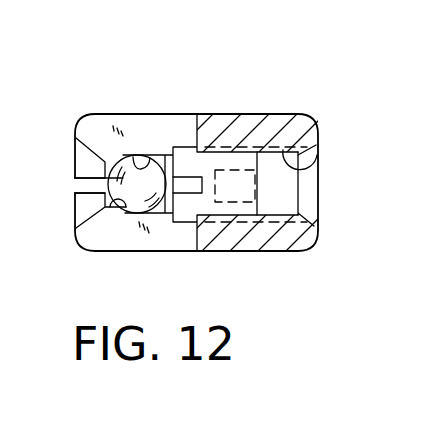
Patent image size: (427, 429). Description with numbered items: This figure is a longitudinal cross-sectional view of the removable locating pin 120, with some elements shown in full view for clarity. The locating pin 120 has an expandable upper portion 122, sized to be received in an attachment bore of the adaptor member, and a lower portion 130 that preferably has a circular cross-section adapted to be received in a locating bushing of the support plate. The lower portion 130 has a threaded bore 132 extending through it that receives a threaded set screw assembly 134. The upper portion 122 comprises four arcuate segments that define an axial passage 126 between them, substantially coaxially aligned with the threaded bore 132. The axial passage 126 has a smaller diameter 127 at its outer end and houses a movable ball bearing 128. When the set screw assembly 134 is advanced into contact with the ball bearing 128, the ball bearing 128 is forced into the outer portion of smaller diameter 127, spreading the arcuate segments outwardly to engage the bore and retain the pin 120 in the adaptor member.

The locating pin 120 is at (265, 103).
The expandable upper portion 122 is at (151, 232).
The axial passage 126 is at (147, 158).
The smaller diameter 127 is at (122, 208).
The ball bearing 128 is at (123, 188).
The lower portion 130 is at (260, 243).
The threaded bore 132 is at (317, 155).
The set screw assembly 134 is at (282, 200).